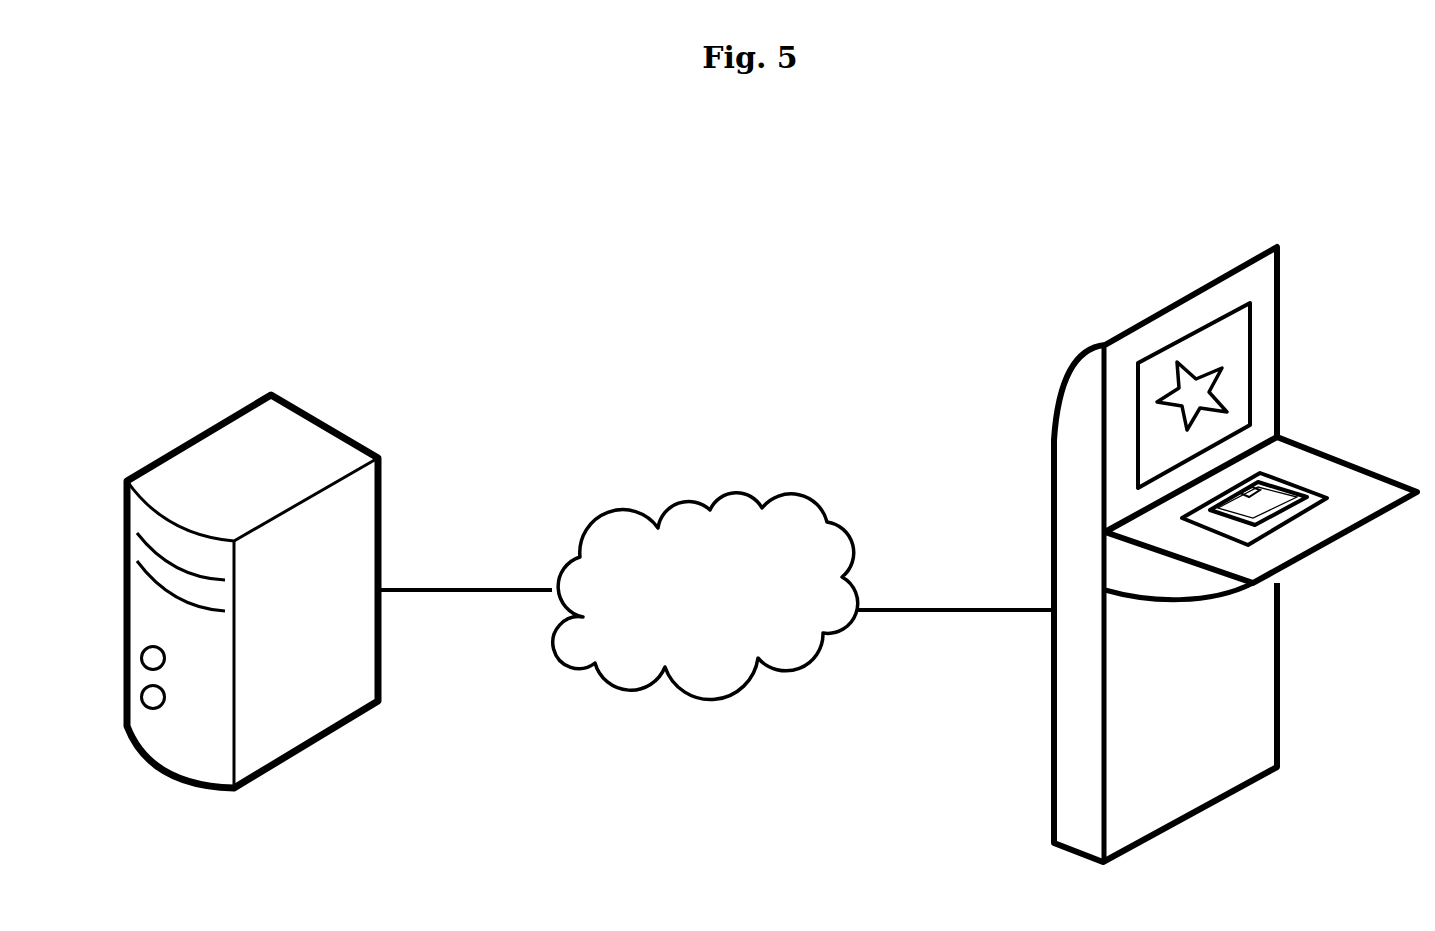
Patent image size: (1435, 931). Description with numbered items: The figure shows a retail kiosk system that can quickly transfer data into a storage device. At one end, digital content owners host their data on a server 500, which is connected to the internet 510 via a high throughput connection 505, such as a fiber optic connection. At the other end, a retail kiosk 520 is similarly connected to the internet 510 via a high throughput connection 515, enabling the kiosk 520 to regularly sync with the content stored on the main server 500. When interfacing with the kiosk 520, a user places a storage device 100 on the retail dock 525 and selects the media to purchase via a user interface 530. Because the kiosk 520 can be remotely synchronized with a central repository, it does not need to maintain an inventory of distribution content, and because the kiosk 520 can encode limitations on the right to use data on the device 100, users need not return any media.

The server 500 is at (269, 383).
The high throughput connection 505 is at (488, 585).
The internet 510 is at (735, 465).
The high throughput connection 515 is at (951, 598).
The retail kiosk 520 is at (1244, 554).
The retail dock 525 is at (1293, 523).
The user interface 530 is at (1253, 340).
The storage device 100 is at (1300, 493).